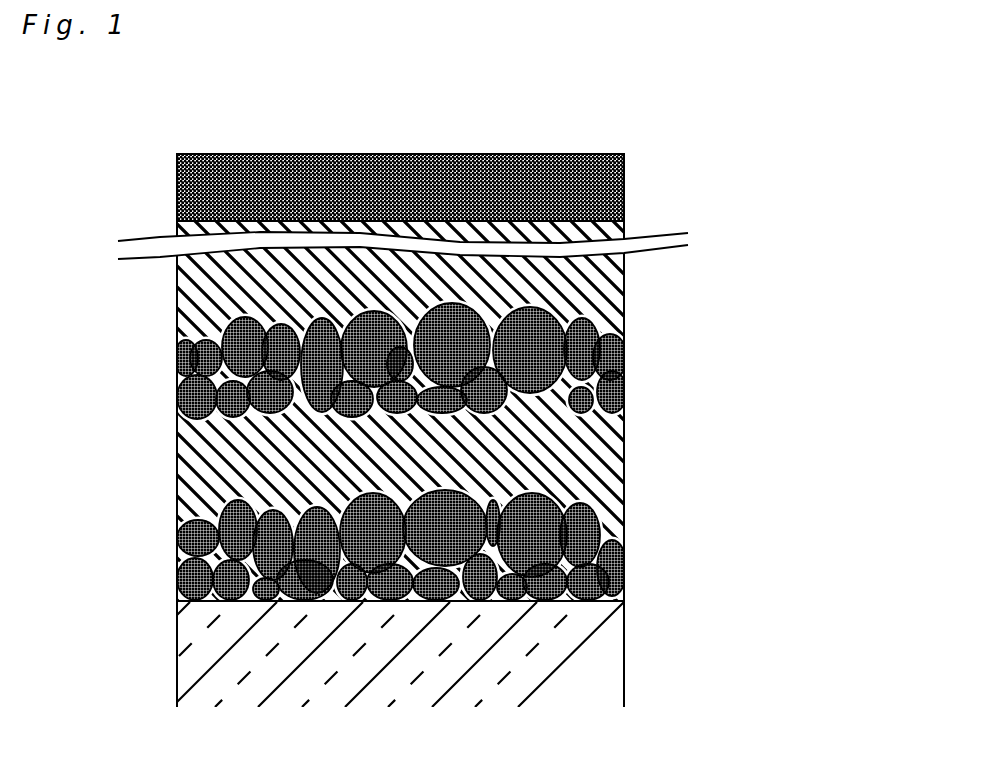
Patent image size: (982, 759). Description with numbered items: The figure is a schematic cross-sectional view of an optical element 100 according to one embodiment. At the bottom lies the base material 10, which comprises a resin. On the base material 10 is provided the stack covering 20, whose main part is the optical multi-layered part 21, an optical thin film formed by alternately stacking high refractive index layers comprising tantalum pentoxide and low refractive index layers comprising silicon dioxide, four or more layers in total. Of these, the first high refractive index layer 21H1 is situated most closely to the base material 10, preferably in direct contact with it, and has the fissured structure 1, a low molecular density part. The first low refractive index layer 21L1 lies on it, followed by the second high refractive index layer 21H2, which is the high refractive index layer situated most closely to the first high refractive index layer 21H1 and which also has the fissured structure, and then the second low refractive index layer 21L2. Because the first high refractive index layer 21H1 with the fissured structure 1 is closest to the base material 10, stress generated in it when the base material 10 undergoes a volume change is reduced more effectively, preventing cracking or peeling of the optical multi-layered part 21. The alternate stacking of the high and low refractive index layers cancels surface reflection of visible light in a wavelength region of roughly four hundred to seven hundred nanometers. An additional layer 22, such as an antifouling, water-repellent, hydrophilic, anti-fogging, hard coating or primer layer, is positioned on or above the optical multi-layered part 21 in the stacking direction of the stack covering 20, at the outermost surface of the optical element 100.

The optical element 100 is at (657, 125).
The stack covering 20 is at (468, 379).
The optical multi-layered part 21 is at (409, 379).
The additional layer 22 is at (193, 186).
The low refractive index layer 21L2 is at (193, 311).
The second high refractive index layer 21H2 is at (193, 393).
The low refractive index layer 21L1 is at (193, 483).
The first high refractive index layer 21H1 is at (178, 550).
The fissured structure 1 is at (198, 568).
The base material 10 is at (592, 665).